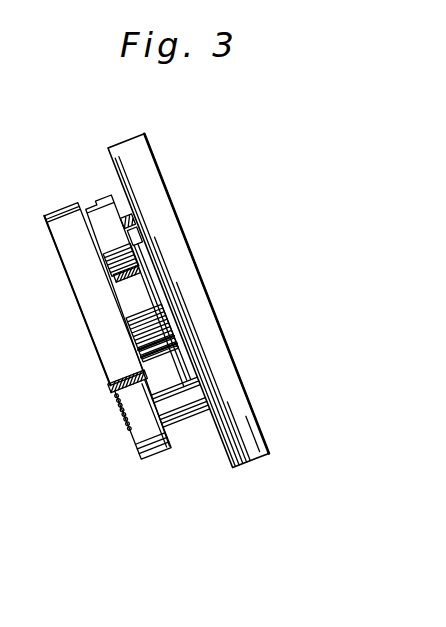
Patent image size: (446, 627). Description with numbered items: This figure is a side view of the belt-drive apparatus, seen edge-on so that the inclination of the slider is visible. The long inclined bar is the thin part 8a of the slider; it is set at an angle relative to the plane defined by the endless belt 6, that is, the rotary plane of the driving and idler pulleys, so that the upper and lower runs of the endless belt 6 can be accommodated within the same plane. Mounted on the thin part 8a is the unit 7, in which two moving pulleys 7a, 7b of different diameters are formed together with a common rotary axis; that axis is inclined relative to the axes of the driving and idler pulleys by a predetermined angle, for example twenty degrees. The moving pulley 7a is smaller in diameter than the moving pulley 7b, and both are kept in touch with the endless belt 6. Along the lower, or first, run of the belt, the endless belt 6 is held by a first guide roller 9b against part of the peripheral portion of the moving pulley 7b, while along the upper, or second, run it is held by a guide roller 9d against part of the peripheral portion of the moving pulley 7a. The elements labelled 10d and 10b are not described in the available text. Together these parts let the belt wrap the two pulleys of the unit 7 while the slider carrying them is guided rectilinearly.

The endless belt 6 is at (117, 383).
The unit 7 is at (209, 302).
The moving pulley 7a is at (140, 291).
The moving pulley 7b is at (113, 343).
The thin part 8a is at (153, 163).
The guide roller 9d is at (90, 200).
The first guide roller 9b is at (147, 460).
The upper terminal 10d is at (133, 227).
The lower terminal 10b is at (183, 410).